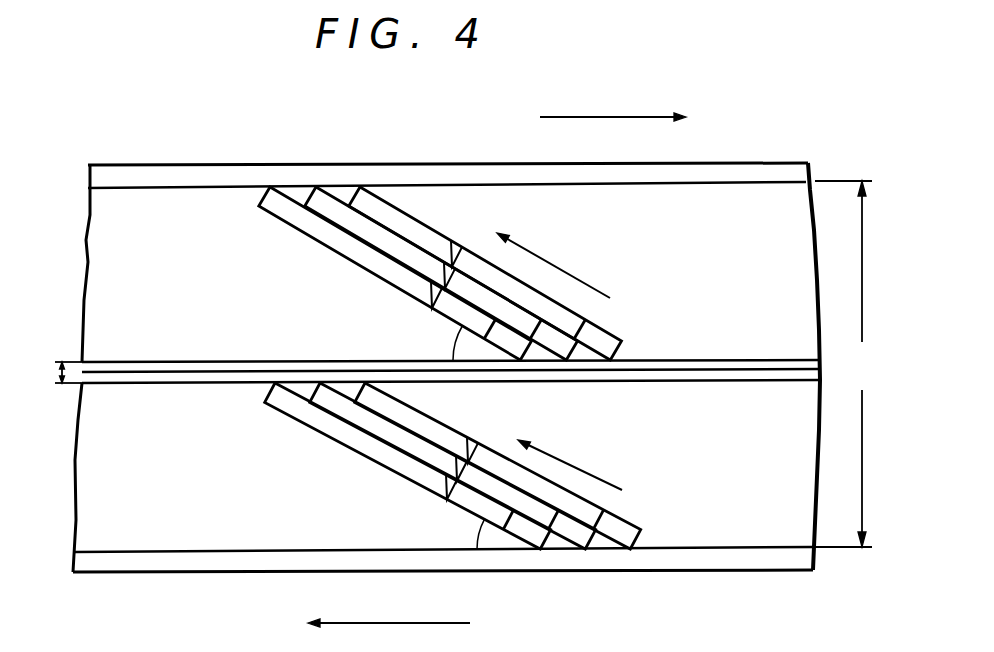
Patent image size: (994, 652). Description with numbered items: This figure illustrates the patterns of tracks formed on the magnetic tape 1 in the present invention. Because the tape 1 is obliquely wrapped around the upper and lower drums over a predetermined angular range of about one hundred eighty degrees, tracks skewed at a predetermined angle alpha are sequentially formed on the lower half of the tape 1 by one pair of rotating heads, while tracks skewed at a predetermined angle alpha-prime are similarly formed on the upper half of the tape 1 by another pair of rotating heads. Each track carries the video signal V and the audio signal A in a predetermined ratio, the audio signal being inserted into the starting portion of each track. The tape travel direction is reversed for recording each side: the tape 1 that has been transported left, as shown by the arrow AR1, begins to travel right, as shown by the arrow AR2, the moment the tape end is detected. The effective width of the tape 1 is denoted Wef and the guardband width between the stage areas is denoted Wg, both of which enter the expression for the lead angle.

The magnetic tape 1 is at (166, 165).
The arrow indicating leftward tape travel AR1 is at (514, 609).
The arrow indicating rightward tape travel AR2 is at (495, 99).
The effective width of the magnetic tape Wef is at (848, 364).
The guardband width Wg is at (62, 373).